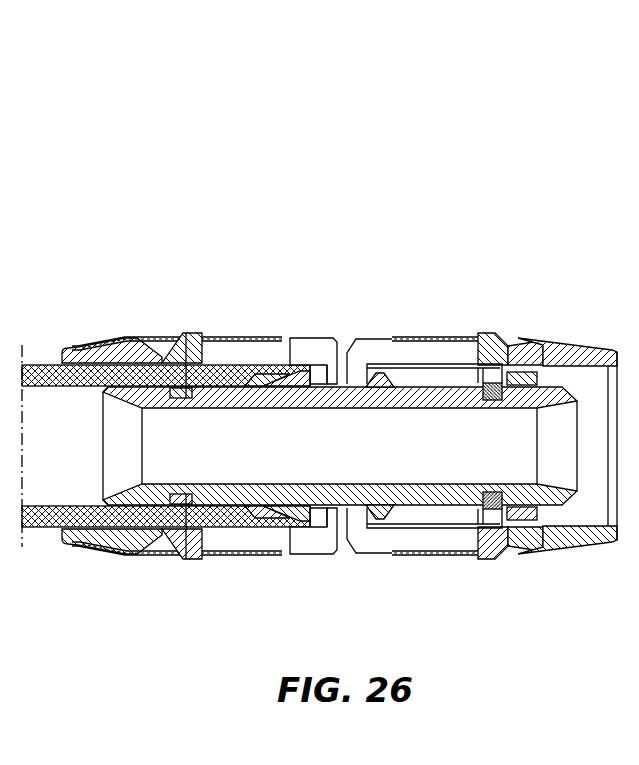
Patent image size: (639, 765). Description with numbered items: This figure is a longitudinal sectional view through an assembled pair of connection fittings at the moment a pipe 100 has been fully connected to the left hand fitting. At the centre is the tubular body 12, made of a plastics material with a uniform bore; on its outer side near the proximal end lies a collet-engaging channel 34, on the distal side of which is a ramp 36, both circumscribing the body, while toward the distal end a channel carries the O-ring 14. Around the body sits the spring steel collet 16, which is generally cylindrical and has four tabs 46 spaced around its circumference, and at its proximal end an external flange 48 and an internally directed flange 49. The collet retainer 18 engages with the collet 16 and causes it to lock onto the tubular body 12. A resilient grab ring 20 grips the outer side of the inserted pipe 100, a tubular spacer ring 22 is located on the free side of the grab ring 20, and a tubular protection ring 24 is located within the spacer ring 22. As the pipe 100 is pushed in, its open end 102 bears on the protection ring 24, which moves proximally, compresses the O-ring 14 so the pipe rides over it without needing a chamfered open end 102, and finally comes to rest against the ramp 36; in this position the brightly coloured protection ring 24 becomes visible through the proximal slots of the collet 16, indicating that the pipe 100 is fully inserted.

The pipe 100 is at (42, 527).
The tubular body 12 is at (248, 394).
The open end 102 is at (259, 386).
The grab ring 20 is at (140, 338).
The spacer ring 22 is at (102, 338).
The tabs 46 is at (173, 553).
The O-ring 14 is at (186, 333).
The protection ring 24 is at (288, 342).
The external flange 48 is at (307, 343).
The collet 16 is at (327, 350).
The collet-engaging channel 34 is at (327, 507).
The ramp 36 is at (288, 518).
The internally directed flange 49 is at (347, 348).
The collet retainer 18 is at (110, 555).